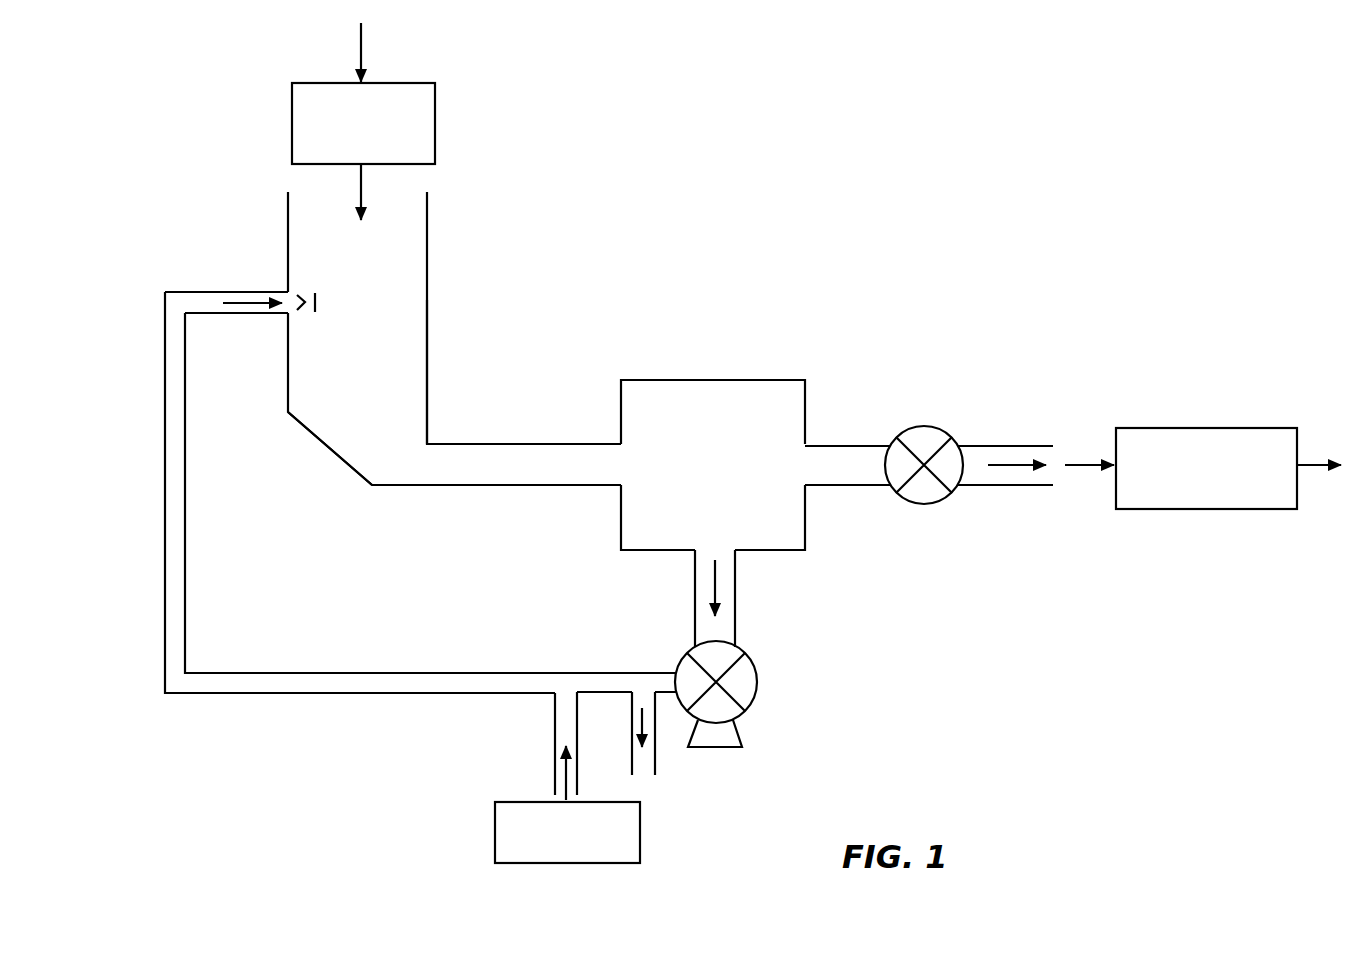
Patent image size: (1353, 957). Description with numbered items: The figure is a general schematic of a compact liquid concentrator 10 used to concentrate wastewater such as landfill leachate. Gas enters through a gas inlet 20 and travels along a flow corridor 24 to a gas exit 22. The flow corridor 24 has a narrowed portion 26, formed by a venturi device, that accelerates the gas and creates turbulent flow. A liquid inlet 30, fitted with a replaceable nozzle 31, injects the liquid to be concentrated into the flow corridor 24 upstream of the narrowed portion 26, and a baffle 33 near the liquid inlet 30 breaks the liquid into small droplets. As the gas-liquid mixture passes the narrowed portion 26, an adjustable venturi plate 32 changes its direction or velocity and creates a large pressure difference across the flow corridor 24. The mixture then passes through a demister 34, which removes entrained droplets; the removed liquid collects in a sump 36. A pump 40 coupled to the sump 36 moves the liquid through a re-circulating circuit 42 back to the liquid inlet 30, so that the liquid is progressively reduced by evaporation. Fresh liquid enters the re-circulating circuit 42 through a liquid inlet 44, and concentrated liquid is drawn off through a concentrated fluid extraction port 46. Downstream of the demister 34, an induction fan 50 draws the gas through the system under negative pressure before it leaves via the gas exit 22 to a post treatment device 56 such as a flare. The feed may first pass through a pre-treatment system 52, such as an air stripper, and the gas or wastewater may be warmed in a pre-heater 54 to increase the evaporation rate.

The liquid concentrator 10 is at (703, 213).
The gas inlet 20 is at (428, 197).
The gas exit 22 is at (1053, 446).
The flow corridor 24 is at (535, 478).
The narrowed portion 26 is at (413, 418).
The liquid inlet 30 is at (288, 290).
The replaceable nozzle 31 is at (300, 294).
The venturi plate 32 is at (337, 458).
The baffle 33 is at (315, 310).
The demister 34 is at (713, 380).
The sump 36 is at (732, 570).
The pump 40 is at (757, 680).
The re-circulating circuit 42 is at (288, 652).
The liquid inlet 44 is at (577, 712).
The concentrated fluid extraction port 46 is at (643, 767).
The induction fan 50 is at (923, 427).
The pre-treatment system 52 is at (640, 832).
The pre-heater 54 is at (435, 123).
The post treatment device 56 is at (1188, 428).